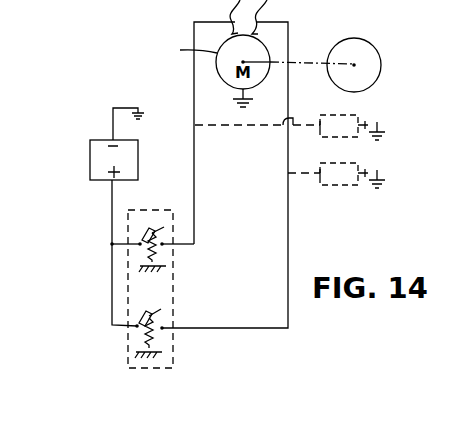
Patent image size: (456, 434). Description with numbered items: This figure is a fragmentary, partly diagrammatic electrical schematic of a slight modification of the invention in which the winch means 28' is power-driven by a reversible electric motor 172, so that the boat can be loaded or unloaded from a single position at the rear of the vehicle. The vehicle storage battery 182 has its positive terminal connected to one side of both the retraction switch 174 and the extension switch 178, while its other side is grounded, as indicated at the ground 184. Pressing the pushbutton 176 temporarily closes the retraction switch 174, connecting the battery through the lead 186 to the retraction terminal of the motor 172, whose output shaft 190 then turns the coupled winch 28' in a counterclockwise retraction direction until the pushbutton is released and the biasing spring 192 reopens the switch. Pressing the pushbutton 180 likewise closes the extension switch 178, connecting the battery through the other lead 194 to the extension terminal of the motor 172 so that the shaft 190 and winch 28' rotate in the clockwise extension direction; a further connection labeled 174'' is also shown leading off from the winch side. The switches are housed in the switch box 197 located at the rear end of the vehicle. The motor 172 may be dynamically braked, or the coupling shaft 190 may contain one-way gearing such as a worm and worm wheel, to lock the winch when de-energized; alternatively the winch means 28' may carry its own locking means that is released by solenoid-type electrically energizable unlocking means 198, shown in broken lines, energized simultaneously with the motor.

The reversible electric motor 172 is at (183, 53).
The retraction switch 174 is at (103, 236).
The pushbutton 176 is at (145, 235).
The biasing spring 192 is at (148, 253).
The vehicle storage battery 182 is at (84, 158).
The ground connection 184 is at (143, 111).
The lead 186 is at (194, 212).
The pushbutton 180 is at (142, 313).
The extension switch 178 is at (156, 313).
The switch box 197 is at (118, 348).
The lead 194 is at (288, 252).
The output shaft 190 is at (312, 62).
The winch means 28' is at (380, 57).
The lead wire 174'' is at (432, 65).
The electrically energizable unlocking means 198 is at (360, 115).